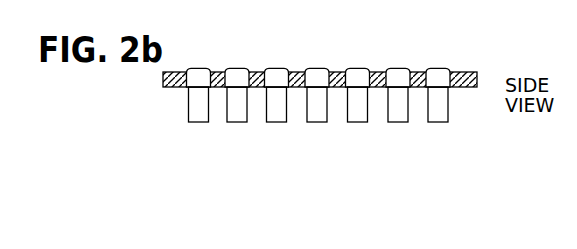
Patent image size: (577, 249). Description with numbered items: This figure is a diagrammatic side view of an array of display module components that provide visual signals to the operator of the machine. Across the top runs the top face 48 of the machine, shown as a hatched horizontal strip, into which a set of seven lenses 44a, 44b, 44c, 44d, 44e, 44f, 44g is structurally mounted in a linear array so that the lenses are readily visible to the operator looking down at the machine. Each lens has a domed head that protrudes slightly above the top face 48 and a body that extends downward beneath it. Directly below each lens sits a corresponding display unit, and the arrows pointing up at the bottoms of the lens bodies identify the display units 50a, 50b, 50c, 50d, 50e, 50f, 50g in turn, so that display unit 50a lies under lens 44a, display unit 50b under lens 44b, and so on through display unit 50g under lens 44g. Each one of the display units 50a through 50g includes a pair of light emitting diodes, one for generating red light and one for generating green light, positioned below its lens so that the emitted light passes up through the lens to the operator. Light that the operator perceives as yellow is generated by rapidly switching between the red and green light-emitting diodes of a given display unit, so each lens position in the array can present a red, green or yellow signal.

The lens 44a is at (194, 68).
The lens 44b is at (230, 68).
The lens 44c is at (278, 68).
The lens 44d is at (318, 68).
The lens 44e is at (358, 68).
The lens 44f is at (403, 68).
The lens 44g is at (442, 68).
The top face 48 is at (468, 87).
The display unit 50a is at (193, 135).
The display unit 50b is at (237, 135).
The display unit 50c is at (278, 135).
The display unit 50d is at (317, 135).
The display unit 50e is at (360, 135).
The display unit 50f is at (398, 135).
The display unit 50g is at (440, 135).